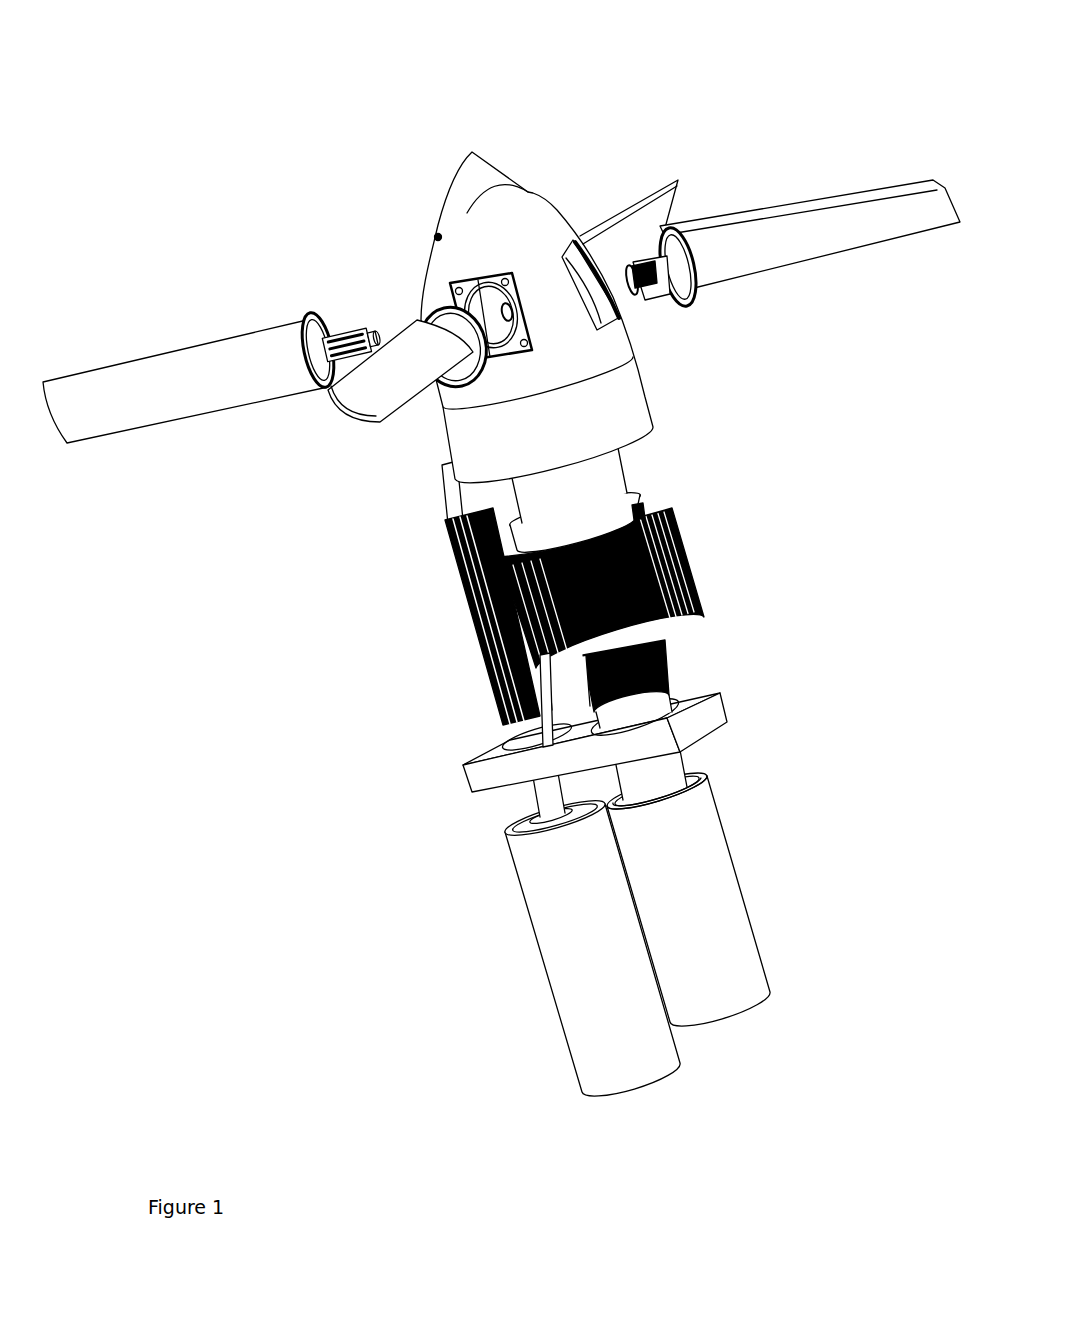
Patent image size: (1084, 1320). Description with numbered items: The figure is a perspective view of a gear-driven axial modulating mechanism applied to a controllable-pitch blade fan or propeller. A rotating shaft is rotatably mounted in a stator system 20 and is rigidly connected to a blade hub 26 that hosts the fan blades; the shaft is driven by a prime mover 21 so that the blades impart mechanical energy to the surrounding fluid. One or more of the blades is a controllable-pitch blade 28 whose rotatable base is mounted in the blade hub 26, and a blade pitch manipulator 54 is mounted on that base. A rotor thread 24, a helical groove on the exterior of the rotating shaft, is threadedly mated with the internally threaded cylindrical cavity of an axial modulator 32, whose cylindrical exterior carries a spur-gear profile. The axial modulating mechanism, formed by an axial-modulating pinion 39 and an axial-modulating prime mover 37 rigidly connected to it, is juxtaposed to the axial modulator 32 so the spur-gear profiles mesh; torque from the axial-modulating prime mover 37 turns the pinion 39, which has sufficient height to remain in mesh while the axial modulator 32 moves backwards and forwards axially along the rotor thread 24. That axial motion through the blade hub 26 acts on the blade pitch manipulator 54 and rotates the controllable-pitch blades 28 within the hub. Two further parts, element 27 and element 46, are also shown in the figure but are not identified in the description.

The stator system 20 is at (732, 699).
The prime mover 21 is at (775, 995).
The rotor thread 24 is at (670, 678).
The blade hub 26 is at (651, 374).
The coupling 27 is at (699, 775).
The controllable-pitch blade 28 is at (930, 177).
The axial modulator 32 is at (678, 502).
The axial-modulating prime mover 37 is at (568, 1063).
The axial-modulating pinion 39 is at (440, 522).
The drive shaft 46 is at (628, 463).
The blade pitch manipulator 54 is at (352, 318).